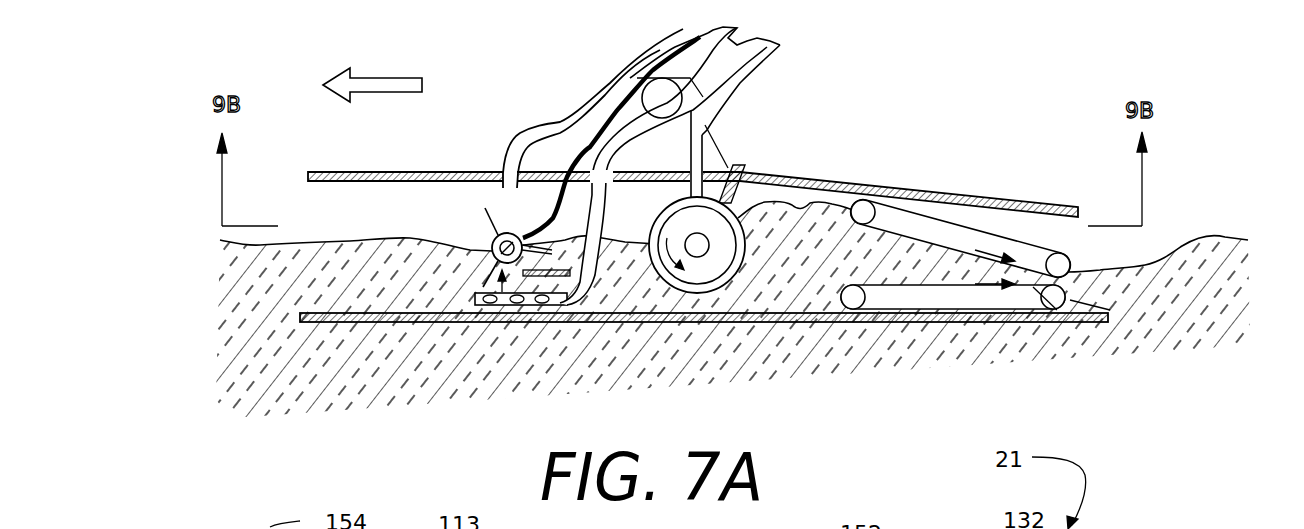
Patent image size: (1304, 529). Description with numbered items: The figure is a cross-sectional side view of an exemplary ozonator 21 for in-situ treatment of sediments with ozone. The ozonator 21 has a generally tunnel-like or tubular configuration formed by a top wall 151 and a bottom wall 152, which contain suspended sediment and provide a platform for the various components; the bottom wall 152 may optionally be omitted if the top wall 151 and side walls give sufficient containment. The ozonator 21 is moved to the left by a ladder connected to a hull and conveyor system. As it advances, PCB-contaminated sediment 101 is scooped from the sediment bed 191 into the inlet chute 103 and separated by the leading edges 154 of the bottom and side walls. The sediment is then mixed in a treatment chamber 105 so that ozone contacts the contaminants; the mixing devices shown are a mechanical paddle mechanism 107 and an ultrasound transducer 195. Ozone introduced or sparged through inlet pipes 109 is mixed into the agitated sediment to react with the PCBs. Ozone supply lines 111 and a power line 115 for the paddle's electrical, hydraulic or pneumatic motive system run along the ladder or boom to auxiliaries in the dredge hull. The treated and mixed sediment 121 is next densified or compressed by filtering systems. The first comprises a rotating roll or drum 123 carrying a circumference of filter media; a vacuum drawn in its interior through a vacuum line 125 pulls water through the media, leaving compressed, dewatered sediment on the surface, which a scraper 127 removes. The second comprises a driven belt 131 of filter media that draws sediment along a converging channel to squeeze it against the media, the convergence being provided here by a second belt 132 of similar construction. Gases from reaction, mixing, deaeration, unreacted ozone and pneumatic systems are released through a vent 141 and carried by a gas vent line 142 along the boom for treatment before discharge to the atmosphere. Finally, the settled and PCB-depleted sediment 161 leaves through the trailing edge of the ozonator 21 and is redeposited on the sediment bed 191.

The ozonator 21 is at (835, 128).
The sediment 101 is at (228, 300).
The inlet chute 103 is at (370, 313).
The treatment chamber 105 is at (420, 172).
The mechanical paddle mechanism 107 is at (495, 235).
The inlet pipes 109 is at (590, 318).
The ozone supply lines 111 is at (608, 150).
The power line 115 is at (620, 73).
The treated and mixed sediment 121 is at (647, 278).
The rotating roll or drum 123 is at (765, 157).
The vacuum line 125 is at (695, 144).
The scraper 127 is at (720, 150).
The driven belt 131 is at (1050, 318).
The second belt 132 is at (982, 227).
The vent 141 is at (503, 162).
The gas vent line 142 is at (522, 127).
The top wall 151 is at (878, 196).
The bottom wall 152 is at (968, 314).
The leading edges 154 is at (230, 300).
The settled and PCB depleted sediment 161 is at (1200, 258).
The sediment bed 191 is at (848, 347).
The ultrasound transducer 195 is at (590, 272).